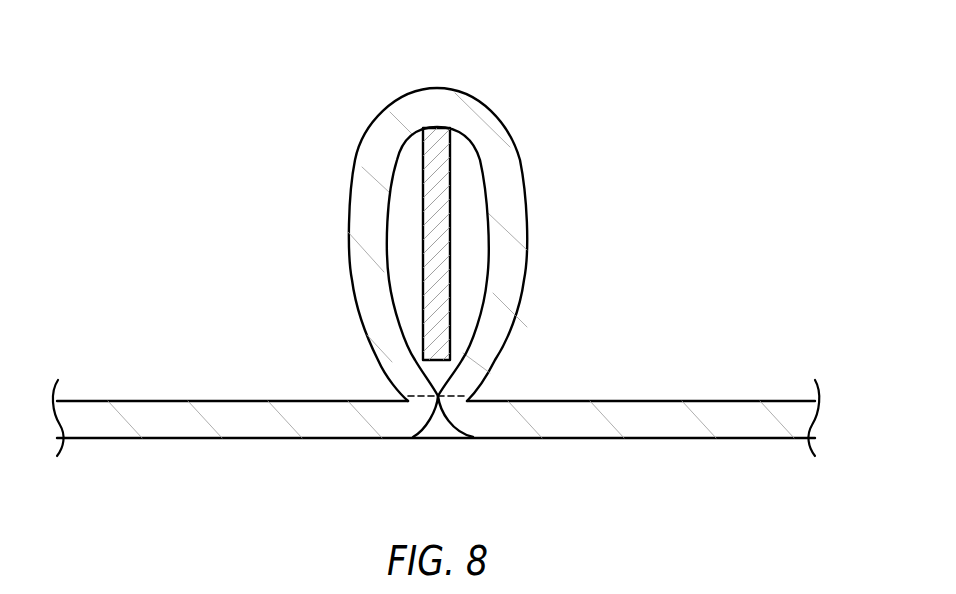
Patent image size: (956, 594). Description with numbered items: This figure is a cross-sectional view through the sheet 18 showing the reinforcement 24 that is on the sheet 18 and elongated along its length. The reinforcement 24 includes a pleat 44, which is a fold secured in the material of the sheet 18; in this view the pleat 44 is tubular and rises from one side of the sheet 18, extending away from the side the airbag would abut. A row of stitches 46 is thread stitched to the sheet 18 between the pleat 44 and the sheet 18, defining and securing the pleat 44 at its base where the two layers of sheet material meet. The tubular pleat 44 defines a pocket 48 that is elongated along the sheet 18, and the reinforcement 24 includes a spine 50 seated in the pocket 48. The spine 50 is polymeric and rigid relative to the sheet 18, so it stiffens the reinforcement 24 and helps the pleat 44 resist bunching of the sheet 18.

The sheet 18 is at (634, 401).
The reinforcement 24 is at (248, 173).
The pleat 44 is at (492, 108).
The row of stitches 46 is at (421, 396).
The pocket 48 is at (408, 170).
The spine 50 is at (450, 248).